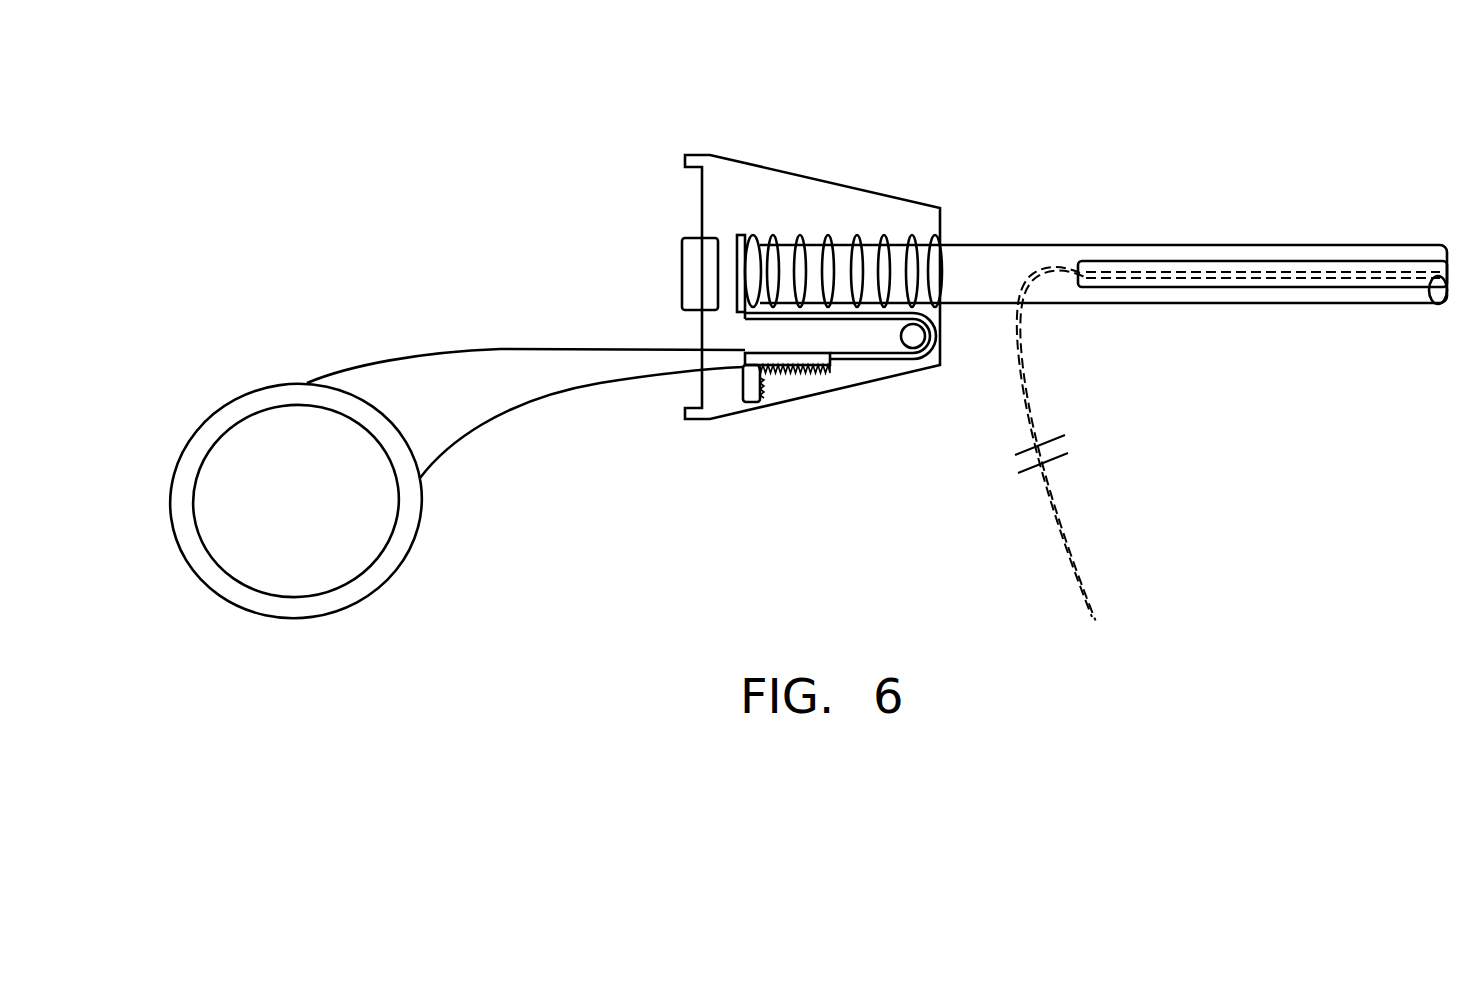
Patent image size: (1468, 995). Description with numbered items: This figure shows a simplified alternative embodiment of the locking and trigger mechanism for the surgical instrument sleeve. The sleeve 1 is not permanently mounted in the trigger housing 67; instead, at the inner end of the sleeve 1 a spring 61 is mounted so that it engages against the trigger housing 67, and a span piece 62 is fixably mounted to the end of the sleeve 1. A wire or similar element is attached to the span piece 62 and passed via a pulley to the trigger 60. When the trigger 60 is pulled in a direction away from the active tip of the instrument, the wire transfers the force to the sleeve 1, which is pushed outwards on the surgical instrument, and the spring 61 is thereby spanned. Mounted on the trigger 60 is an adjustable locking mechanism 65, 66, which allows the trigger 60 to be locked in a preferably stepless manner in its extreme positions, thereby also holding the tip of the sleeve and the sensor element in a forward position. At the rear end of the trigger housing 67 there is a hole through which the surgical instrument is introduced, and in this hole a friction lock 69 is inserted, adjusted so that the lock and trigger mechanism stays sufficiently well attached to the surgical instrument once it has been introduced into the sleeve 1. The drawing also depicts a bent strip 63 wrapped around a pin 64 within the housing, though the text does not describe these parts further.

The sleeve 1 is at (1243, 253).
The trigger 60 is at (240, 403).
The spring 61 is at (860, 236).
The span piece 62 is at (747, 233).
The bent lever strip 63 is at (858, 359).
The pivot pin 64 is at (924, 342).
The adjustable locking mechanism 65 is at (737, 394).
The adjustable locking mechanism 66 is at (785, 381).
The trigger housing 67 is at (731, 156).
The friction lock 69 is at (677, 268).